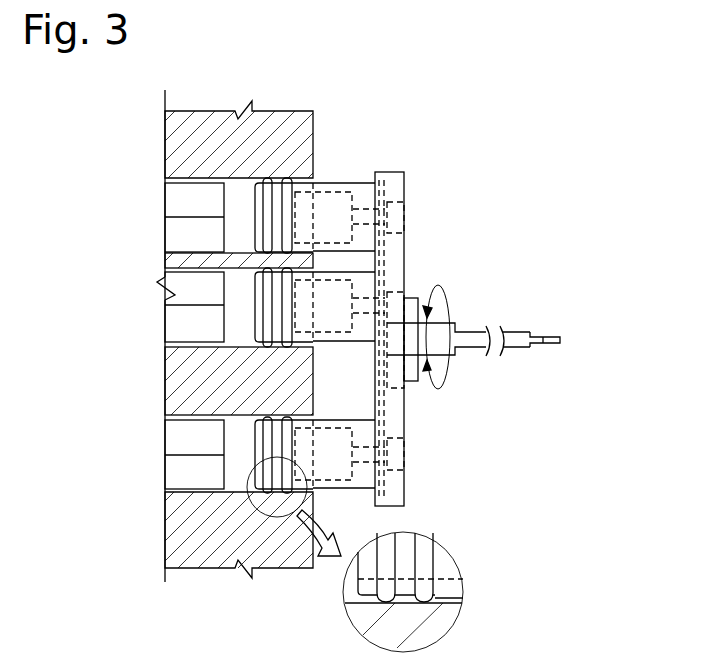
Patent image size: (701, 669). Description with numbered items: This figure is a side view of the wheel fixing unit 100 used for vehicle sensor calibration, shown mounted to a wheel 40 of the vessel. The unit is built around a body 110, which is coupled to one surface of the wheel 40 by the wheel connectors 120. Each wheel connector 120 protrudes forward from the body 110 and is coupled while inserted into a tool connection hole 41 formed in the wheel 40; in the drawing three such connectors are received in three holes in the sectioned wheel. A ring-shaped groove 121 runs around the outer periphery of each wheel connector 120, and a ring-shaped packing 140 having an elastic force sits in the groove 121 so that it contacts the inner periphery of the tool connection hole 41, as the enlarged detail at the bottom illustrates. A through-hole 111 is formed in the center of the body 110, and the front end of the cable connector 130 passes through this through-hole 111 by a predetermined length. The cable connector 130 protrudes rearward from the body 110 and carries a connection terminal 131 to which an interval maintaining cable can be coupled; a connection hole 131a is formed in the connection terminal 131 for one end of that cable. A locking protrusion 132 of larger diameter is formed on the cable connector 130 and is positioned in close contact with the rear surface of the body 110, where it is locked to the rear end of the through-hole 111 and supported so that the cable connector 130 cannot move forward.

The wheel 40 is at (285, 120).
The tool connection hole 41 is at (190, 490).
The wheel fixing unit 100 is at (431, 156).
The body 110 is at (398, 238).
The through-hole 111 is at (390, 357).
The wheel connector 120 is at (342, 275).
The ring-shaped groove 121 is at (268, 319).
The cable connector 130 is at (470, 332).
The connection terminal 131 is at (552, 336).
The connection hole 131a is at (545, 345).
The locking protrusion 132 is at (410, 298).
The ring-shaped packing 140 is at (270, 197).